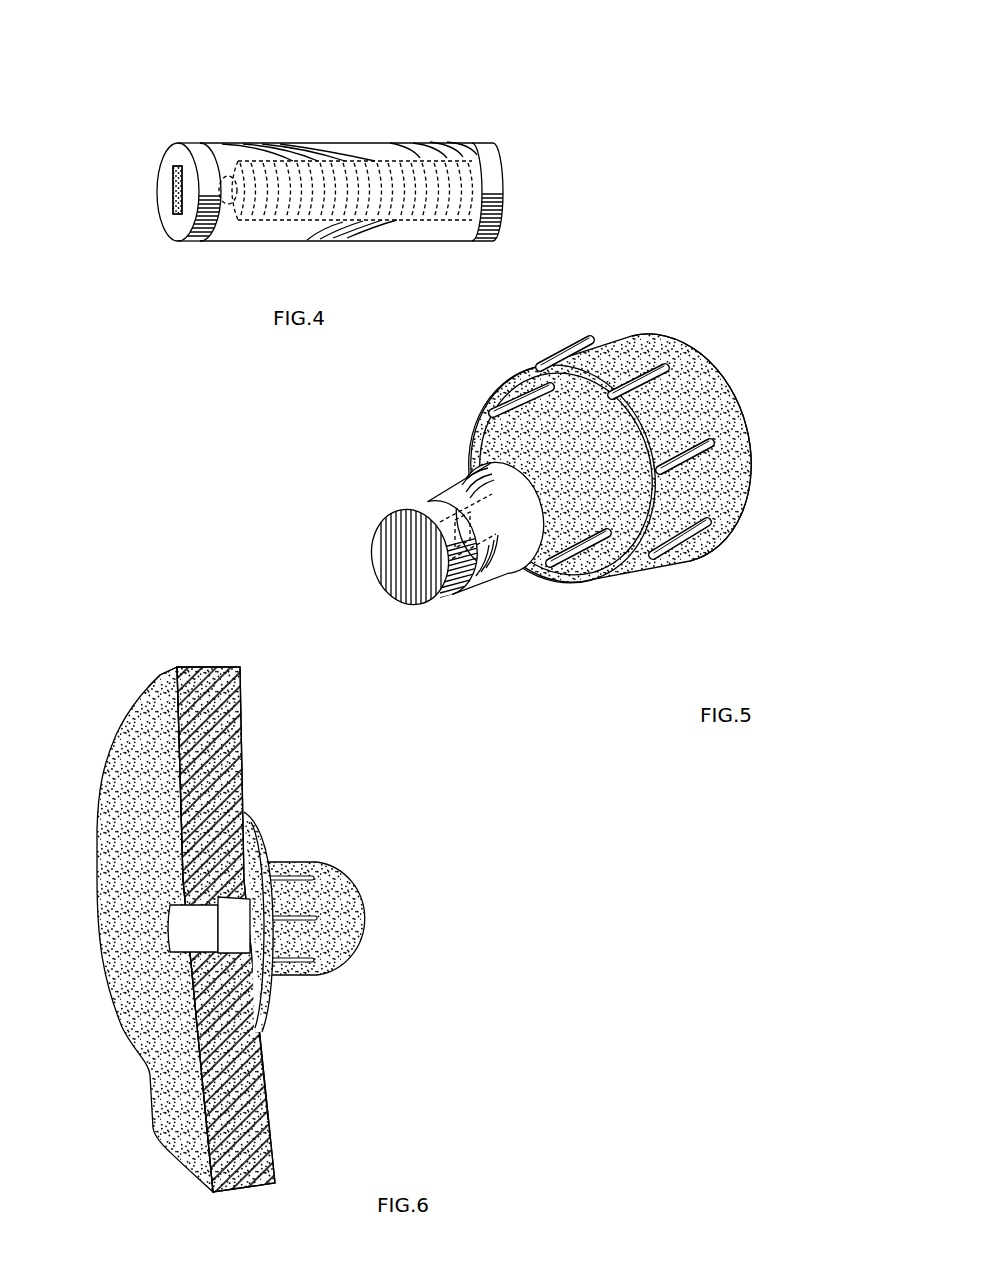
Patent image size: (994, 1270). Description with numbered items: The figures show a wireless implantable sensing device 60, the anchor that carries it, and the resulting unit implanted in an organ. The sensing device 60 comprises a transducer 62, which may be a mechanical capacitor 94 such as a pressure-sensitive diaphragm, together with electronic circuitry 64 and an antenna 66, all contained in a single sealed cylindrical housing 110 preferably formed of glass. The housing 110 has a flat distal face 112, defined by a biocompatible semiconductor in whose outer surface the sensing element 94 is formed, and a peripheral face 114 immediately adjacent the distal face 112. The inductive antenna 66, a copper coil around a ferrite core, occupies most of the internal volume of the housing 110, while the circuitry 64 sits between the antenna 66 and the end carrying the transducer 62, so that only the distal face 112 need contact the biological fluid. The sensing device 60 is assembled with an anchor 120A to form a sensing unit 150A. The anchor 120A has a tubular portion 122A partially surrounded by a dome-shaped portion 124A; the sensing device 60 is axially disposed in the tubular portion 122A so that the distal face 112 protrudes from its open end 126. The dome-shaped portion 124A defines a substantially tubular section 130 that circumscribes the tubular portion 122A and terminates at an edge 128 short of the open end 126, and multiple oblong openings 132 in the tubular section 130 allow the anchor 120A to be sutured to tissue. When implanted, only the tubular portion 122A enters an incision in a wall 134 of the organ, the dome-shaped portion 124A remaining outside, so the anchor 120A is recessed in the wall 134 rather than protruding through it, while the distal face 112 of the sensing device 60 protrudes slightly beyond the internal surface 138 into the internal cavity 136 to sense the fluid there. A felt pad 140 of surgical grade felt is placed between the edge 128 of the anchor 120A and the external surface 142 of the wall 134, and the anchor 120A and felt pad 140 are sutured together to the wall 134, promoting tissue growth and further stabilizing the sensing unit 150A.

In FIG. 4, the sensing device 60 is at (331, 179).
In FIG. 5, the sensing device 60 is at (458, 580).
In FIG. 4, the transducer 62 is at (173, 180).
In FIG. 4, the mechanical capacitor 94 is at (177, 190).
In FIG. 4, the electronic circuitry 64 is at (229, 168).
In FIG. 4, the antenna 66 is at (427, 140).
In FIG. 4, the housing 110 is at (462, 132).
In FIG. 4, the distal face 112 is at (168, 222).
In FIG. 5, the distal face 112 is at (378, 551).
In FIG. 4, the peripheral face 114 is at (228, 235).
In FIG. 5, the sensing unit 150A is at (596, 481).
In FIG. 6, the sensing unit 150A is at (399, 903).
In FIG. 5, the anchor 120A is at (633, 490).
In FIG. 5, the tubular portion 122A is at (517, 448).
In FIG. 5, the dome-shaped portion 124A is at (730, 502).
In FIG. 5, the open end 126 is at (517, 574).
In FIG. 5, the edge 128 is at (600, 589).
In FIG. 5, the tubular section 130 is at (596, 365).
In FIG. 5, the oblong openings 132 is at (662, 372).
In FIG. 6, the wall 134 is at (286, 929).
In FIG. 6, the internal cavity 136 is at (139, 906).
In FIG. 6, the internal surface 138 is at (166, 690).
In FIG. 6, the felt pad 140 is at (262, 838).
In FIG. 6, the external surface 142 is at (262, 1065).